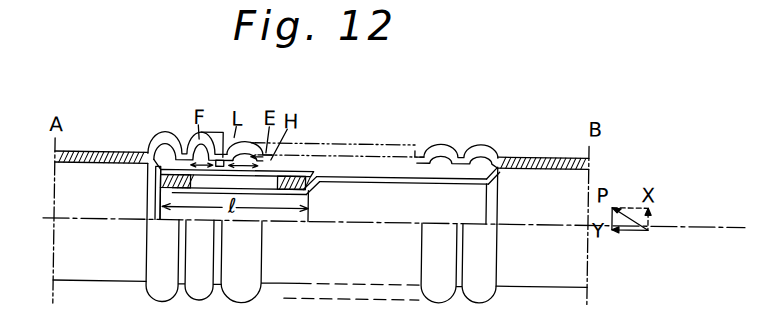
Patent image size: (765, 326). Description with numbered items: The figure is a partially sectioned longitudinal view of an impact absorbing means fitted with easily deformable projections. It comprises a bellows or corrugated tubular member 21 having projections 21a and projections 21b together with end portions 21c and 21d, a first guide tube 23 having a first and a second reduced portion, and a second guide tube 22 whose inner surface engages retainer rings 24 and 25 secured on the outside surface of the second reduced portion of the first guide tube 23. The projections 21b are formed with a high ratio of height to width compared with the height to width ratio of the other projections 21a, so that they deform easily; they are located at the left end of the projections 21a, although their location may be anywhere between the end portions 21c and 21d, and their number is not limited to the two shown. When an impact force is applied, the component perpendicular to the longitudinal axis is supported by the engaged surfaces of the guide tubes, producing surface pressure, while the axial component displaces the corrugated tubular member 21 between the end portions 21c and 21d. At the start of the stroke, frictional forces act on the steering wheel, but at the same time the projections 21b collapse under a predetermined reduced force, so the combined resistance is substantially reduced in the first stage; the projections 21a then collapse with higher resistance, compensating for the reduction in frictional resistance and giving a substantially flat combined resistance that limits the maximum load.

The corrugated tubular member 21 is at (414, 147).
The projections 21a is at (252, 136).
The easily deformable projections 21b is at (187, 133).
The end portion 21c is at (88, 150).
The end portion 21d is at (546, 151).
The second guide tube 22 is at (291, 168).
The first guide tube 23 is at (383, 171).
The retainer ring 24 is at (152, 139).
The retainer ring 25 is at (305, 181).